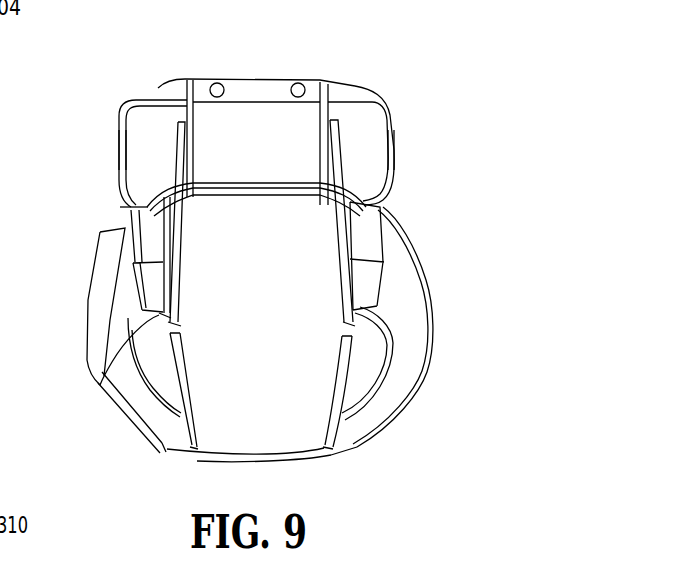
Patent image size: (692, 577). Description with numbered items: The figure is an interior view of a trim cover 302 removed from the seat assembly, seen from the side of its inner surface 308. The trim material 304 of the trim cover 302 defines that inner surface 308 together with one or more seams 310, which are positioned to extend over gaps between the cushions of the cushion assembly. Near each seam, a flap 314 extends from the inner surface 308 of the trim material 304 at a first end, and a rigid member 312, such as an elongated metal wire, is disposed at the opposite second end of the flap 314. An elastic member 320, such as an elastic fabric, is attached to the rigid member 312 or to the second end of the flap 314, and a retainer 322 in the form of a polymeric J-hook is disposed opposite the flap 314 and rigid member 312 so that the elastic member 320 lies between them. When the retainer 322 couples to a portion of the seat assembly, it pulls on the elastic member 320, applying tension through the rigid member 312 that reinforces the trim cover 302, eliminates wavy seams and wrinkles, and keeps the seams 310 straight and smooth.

The trim cover 302 is at (403, 92).
The trim material 304 is at (402, 307).
The inner surface 308 is at (160, 230).
The seams 310 is at (177, 182).
The rigid members 312 is at (363, 200).
The flap 314 is at (183, 155).
The elastic member 320 is at (363, 278).
The retainer 322 is at (125, 292).